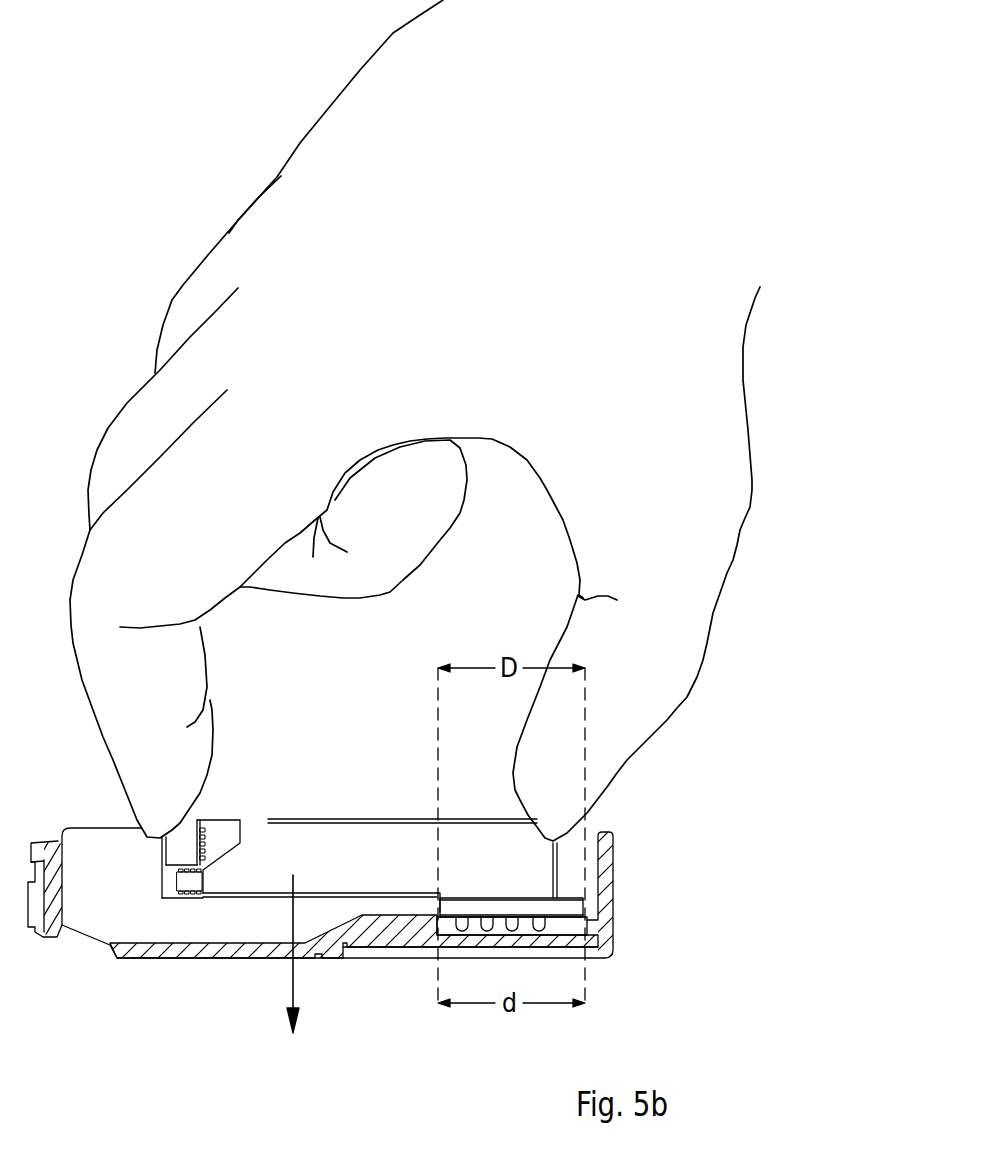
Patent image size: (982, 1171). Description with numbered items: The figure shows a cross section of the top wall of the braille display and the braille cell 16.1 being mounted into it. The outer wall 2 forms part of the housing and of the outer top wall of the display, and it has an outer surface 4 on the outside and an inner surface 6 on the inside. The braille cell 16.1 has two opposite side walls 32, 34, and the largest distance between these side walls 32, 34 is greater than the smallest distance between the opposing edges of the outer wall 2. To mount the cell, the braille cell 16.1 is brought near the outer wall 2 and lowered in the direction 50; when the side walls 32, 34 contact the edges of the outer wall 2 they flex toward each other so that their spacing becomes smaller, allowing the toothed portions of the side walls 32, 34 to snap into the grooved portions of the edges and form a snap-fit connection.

The outer wall 2 is at (247, 960).
The outer surface 4 is at (193, 960).
The inner surface 6 is at (152, 941).
The braille cell 16.1 is at (315, 843).
The side wall 32 is at (438, 907).
The side wall 34 is at (588, 910).
The direction 50 is at (295, 983).